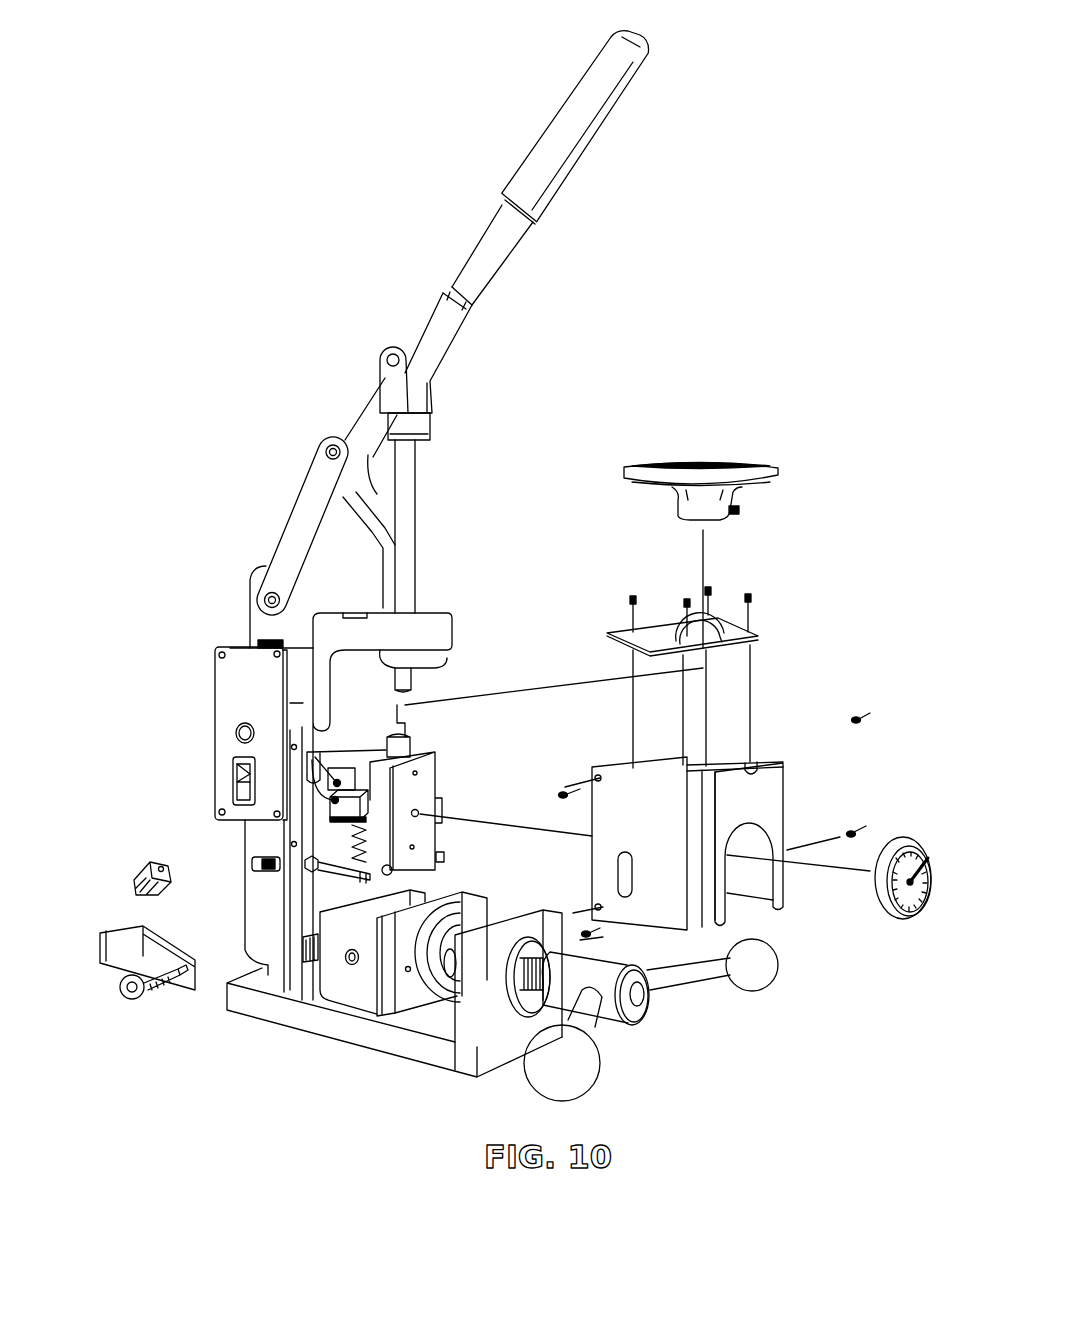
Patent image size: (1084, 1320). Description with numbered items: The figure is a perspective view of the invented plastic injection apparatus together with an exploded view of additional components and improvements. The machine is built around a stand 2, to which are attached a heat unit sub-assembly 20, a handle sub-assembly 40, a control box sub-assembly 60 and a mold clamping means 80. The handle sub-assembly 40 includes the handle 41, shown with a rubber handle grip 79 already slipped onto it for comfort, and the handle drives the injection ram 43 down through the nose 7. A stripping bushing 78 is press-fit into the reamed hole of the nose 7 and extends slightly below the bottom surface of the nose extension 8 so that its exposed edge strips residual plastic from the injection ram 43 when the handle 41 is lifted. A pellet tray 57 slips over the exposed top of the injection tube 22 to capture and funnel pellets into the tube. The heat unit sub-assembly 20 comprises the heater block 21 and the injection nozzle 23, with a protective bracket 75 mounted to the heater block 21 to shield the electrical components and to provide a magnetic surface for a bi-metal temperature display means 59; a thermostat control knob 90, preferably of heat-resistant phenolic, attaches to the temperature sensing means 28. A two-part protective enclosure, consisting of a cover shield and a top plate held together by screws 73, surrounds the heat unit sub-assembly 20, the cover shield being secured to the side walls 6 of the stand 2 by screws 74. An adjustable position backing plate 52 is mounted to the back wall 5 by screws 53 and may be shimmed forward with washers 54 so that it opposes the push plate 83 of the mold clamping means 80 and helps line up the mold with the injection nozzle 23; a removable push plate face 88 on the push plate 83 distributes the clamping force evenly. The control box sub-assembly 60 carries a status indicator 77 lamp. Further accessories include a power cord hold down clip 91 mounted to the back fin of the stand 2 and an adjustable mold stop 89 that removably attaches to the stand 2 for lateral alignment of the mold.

The stand 2 is at (452, 1083).
The back wall 5 is at (318, 893).
The side walls 6 is at (288, 933).
The nose 7 is at (412, 630).
The nose extension 8 is at (412, 662).
The heat unit sub-assembly 20 is at (448, 793).
The heater block 21 is at (368, 788).
The injection tube 22 is at (408, 727).
The injection nozzle 23 is at (397, 870).
The temperature sensing means 28 is at (340, 752).
The handle sub-assembly 40 is at (500, 244).
The handle 41 is at (489, 278).
The injection ram 43 is at (415, 497).
The adjustable position backing plate 52 is at (350, 963).
The screws 53 is at (327, 996).
The washers 54 is at (313, 960).
The pellet tray 57 is at (626, 463).
The temperature display means 59 is at (882, 890).
The control box sub-assembly 60 is at (207, 648).
The screws 73 is at (752, 595).
The screws 74 is at (612, 940).
The bracket 75 is at (418, 783).
The status indicator 77 is at (238, 725).
The bushing 78 is at (417, 681).
The rubber handle grip 79 is at (552, 143).
The mold clamping means 80 is at (643, 1030).
The push plate 83 is at (393, 983).
The removable push plate face 88 is at (382, 970).
The adjustable mold stop 89 is at (127, 953).
The thermostat control knob 90 is at (150, 858).
The hold down clip 91 is at (255, 870).